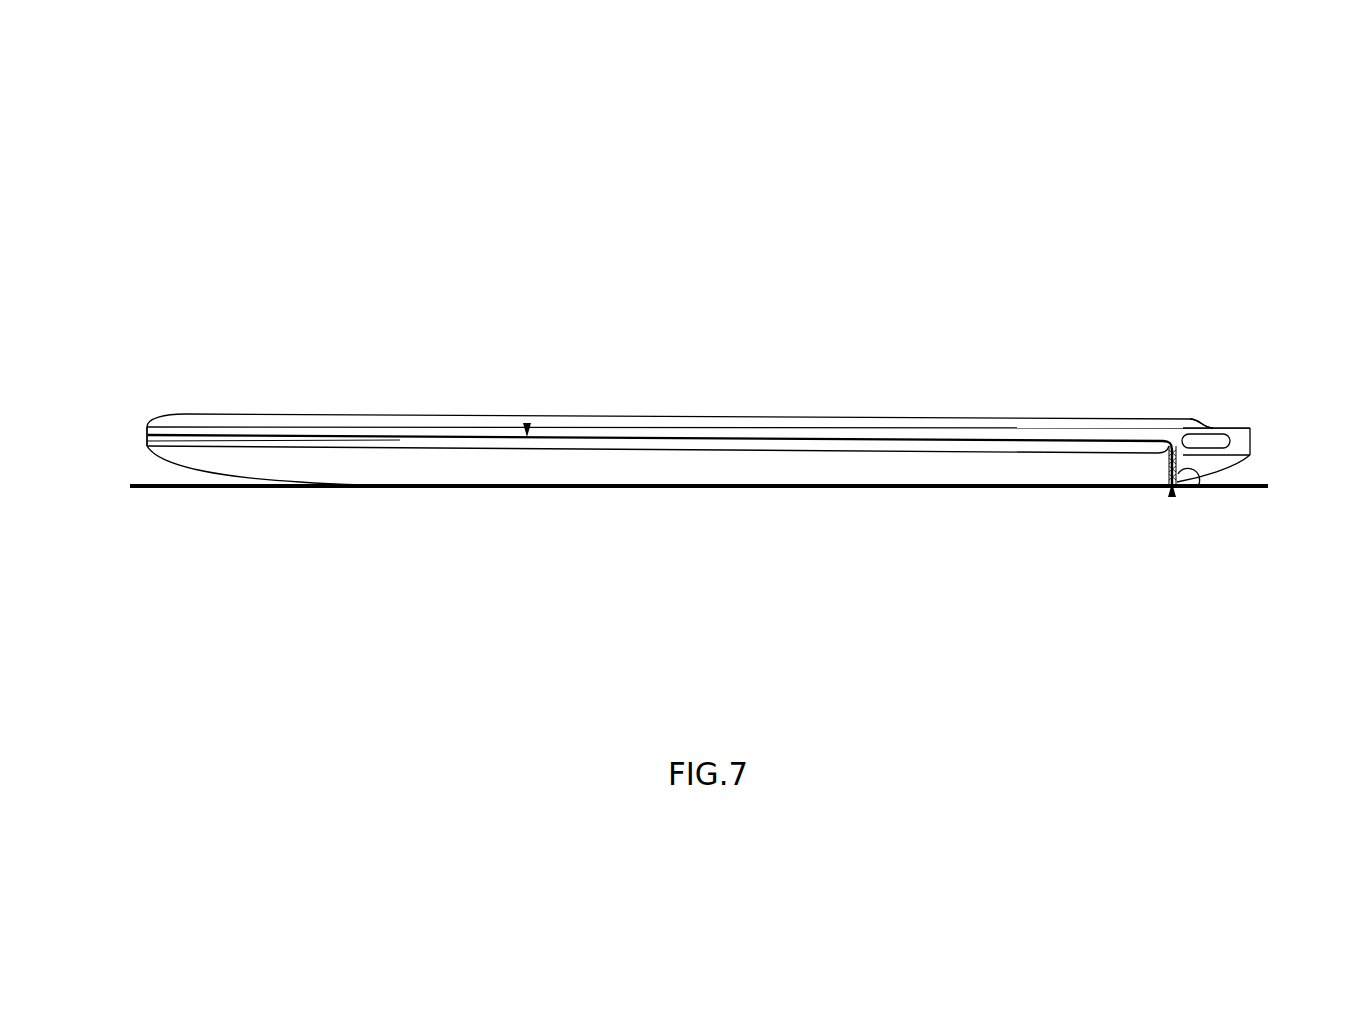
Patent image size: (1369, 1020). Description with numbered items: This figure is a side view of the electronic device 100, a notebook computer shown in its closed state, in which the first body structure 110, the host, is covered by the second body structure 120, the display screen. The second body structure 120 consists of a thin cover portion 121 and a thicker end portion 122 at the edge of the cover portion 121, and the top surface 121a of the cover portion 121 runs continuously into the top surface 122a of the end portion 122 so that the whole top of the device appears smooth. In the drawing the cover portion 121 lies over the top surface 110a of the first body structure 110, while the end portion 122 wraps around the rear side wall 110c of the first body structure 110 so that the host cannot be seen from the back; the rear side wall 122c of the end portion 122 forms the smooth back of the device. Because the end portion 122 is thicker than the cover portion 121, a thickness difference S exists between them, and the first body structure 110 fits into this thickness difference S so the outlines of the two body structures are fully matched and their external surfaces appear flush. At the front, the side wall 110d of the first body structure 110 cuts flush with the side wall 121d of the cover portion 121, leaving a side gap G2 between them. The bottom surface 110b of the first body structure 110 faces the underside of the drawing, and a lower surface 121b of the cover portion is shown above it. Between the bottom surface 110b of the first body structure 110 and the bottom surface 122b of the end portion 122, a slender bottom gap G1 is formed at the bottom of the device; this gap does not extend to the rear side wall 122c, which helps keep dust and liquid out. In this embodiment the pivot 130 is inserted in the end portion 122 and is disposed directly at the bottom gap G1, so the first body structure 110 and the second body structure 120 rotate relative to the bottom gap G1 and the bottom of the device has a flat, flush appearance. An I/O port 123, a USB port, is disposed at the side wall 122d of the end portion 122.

The electronic device 100 is at (108, 117).
The first body structure 110 is at (612, 487).
The top surface of the first body structure 110a is at (318, 427).
The bottom surface of the first body structure 110b is at (768, 486).
The rear side wall of the first body structure 110c is at (1190, 468).
The side wall of the first body structure 110d is at (450, 447).
The second body structure 120 is at (1193, 253).
The cover portion 121 is at (1100, 407).
The top surface of the cover portion 121a is at (665, 418).
The bottom surface of cover 121b is at (902, 442).
The side wall of the cover portion 121d is at (460, 427).
The end portion 122 is at (1195, 415).
The top surface of the end portion 122a is at (1198, 428).
The bottom surface of the end portion 122b is at (1238, 460).
The rear side wall of the end portion 122c is at (1252, 438).
The side wall of the end portion 122d is at (1197, 428).
The I/O port 123 is at (1222, 470).
The pivot 130 is at (1166, 492).
The bottom gap G1 is at (1172, 497).
The side gap G2 is at (527, 423).
The thickness difference S is at (1163, 465).